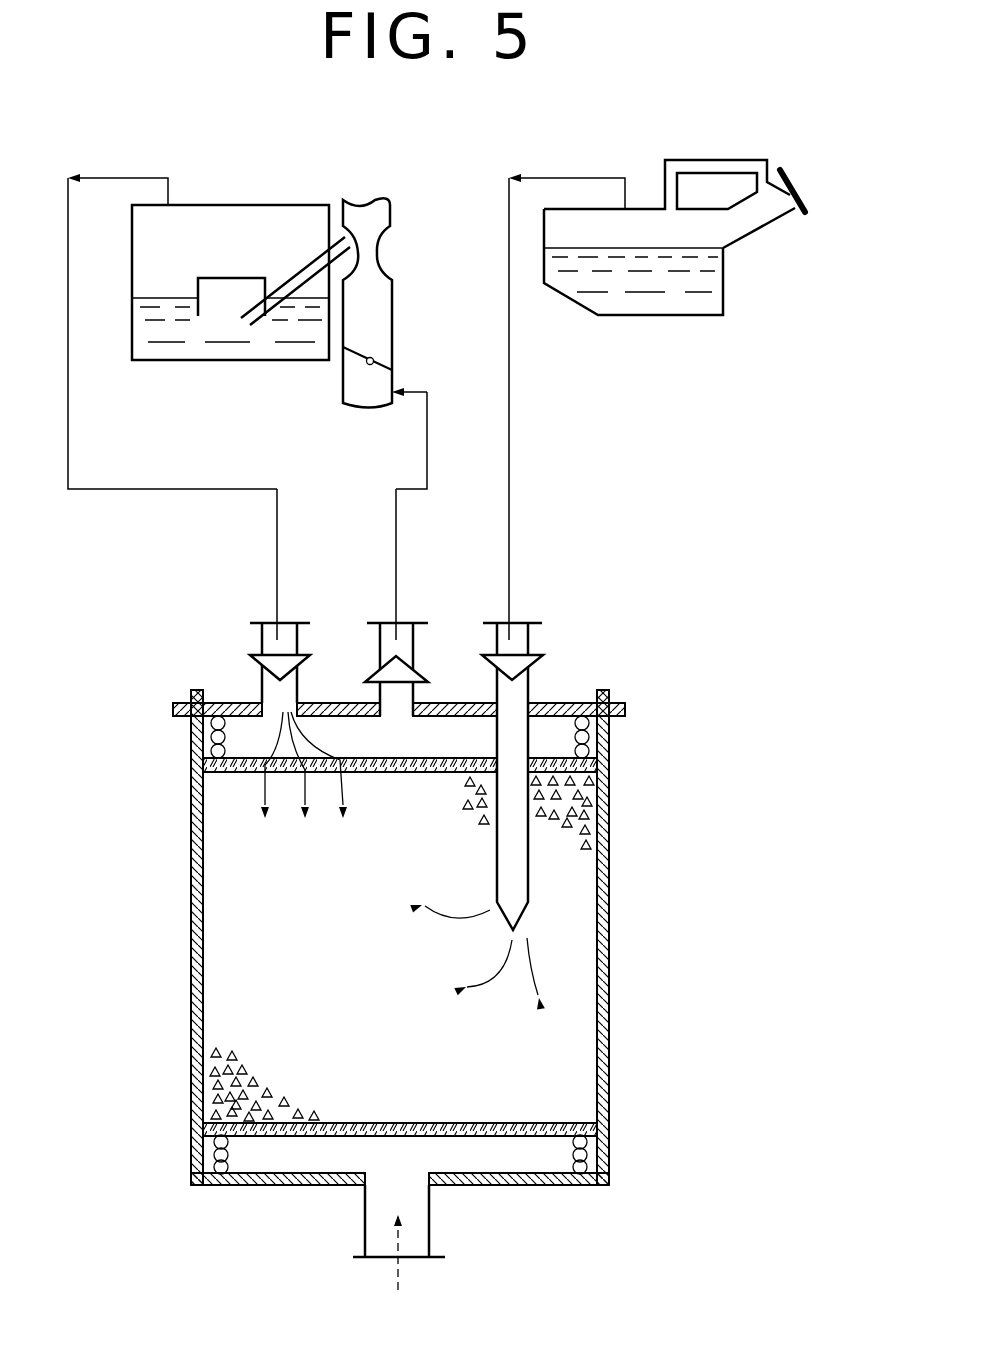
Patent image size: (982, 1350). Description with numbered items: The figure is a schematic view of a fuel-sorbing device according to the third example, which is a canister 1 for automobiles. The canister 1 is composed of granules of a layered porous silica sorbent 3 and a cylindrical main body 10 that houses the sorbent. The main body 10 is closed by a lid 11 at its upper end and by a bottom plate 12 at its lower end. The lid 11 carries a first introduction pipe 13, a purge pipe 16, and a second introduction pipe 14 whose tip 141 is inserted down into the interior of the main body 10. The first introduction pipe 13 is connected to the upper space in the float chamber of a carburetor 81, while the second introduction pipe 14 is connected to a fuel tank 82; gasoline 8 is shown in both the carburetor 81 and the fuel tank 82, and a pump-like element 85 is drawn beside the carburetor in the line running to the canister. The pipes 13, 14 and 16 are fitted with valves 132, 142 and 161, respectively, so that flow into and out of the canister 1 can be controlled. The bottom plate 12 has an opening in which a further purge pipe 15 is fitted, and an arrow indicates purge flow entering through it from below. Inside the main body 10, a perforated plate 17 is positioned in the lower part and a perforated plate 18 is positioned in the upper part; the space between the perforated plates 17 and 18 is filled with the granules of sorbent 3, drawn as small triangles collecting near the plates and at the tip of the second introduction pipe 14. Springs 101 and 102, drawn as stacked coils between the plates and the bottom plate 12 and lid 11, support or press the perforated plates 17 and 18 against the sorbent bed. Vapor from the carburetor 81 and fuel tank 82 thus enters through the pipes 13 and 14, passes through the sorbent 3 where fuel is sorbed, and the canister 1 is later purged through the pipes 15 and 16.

The canister 1 is at (612, 1042).
The sorbent granules 3 is at (583, 803).
The gasoline 8 is at (172, 345).
The main body 10 is at (609, 963).
The lid 11 is at (573, 703).
The bottom plate 12 is at (553, 1184).
The first introduction pipe 13 is at (270, 630).
The second introduction pipe 14 is at (509, 630).
The purge pipe 15 is at (430, 1250).
The purge pipe 16 is at (400, 630).
The perforated plate 17 is at (533, 1123).
The perforated plate 18 is at (282, 775).
The carburetor 81 is at (245, 205).
The fuel tank 82 is at (647, 209).
The pump bottle 85 is at (348, 378).
The spring 101 is at (207, 1147).
The spring 102 is at (210, 737).
The valve 132 is at (258, 668).
The nozzle 141 is at (522, 883).
The valve 142 is at (523, 662).
The valve 161 is at (400, 670).